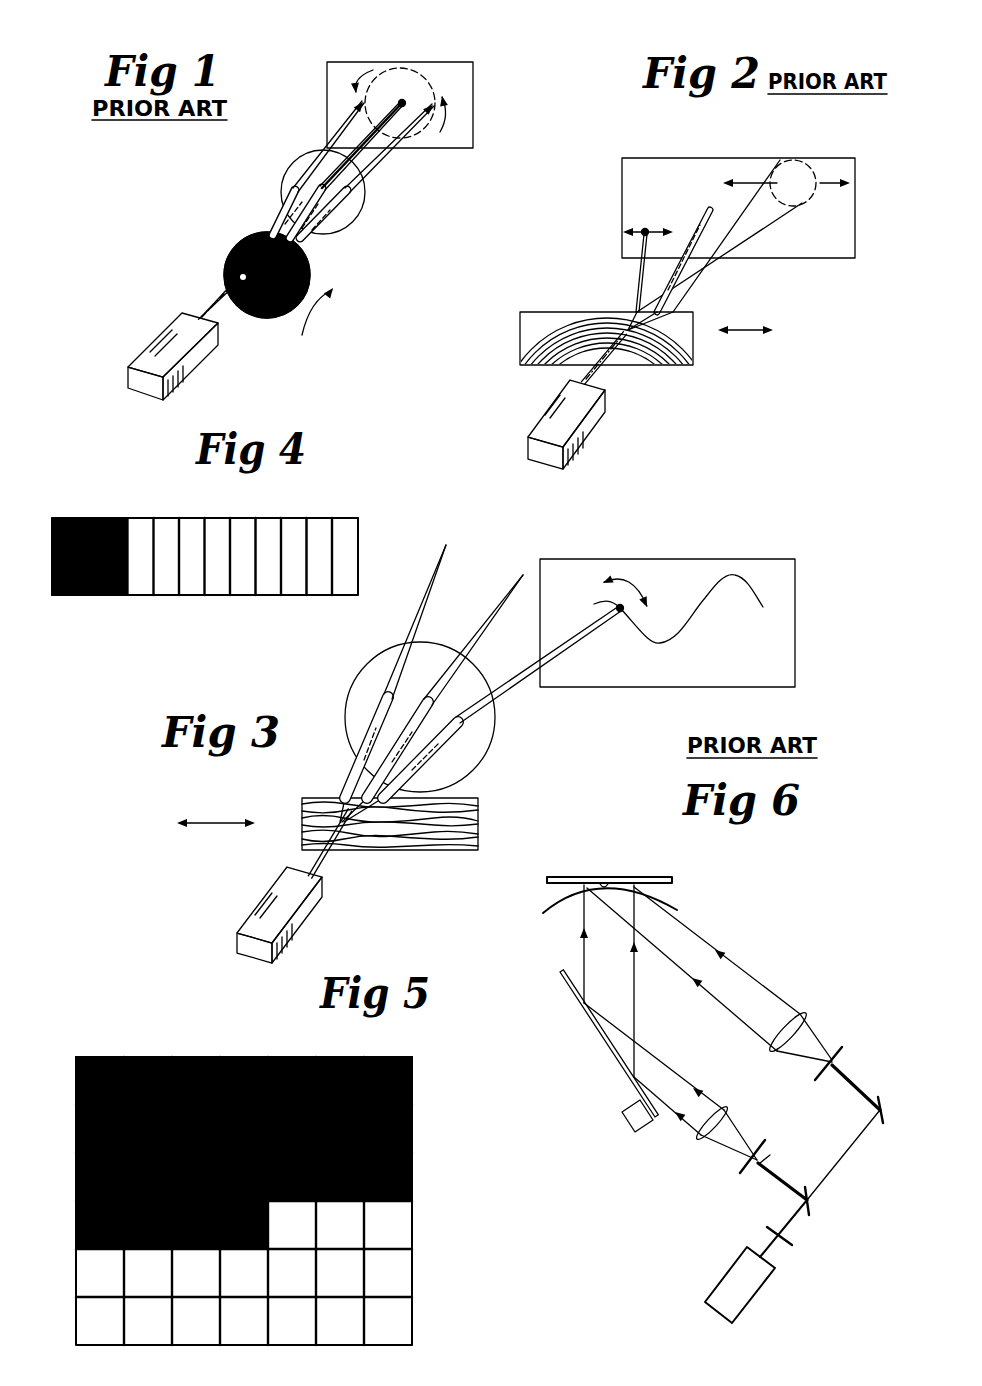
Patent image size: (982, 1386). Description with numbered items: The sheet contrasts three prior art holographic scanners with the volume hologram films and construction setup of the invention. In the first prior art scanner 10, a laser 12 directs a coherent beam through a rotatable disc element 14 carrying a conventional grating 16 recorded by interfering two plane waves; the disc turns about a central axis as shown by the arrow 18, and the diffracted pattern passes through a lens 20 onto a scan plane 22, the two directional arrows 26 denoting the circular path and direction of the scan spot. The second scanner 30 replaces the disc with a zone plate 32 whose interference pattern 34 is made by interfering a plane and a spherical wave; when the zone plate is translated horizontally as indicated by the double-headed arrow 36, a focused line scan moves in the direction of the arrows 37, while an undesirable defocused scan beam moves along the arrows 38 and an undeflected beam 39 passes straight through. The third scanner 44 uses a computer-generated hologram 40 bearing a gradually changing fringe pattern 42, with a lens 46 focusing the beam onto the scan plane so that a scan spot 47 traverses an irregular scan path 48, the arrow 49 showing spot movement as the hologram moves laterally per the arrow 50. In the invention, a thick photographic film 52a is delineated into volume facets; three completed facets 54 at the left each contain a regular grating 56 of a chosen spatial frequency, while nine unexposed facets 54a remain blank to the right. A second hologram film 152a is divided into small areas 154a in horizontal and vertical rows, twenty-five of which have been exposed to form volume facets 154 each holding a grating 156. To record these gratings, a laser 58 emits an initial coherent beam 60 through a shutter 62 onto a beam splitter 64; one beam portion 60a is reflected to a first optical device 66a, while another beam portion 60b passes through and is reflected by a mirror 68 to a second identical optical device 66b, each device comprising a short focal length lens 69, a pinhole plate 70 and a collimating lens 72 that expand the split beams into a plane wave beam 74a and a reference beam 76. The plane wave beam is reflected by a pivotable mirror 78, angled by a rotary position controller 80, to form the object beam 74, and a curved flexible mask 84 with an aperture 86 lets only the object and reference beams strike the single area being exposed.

In FIG. 1, the holographic scanner 10 is at (148, 207).
In FIG. 1, the laser 12 is at (157, 340).
In FIG. 2, the laser 12 is at (535, 425).
In FIG. 3, the laser 12 is at (248, 917).
In FIG. 1, the rotatable disc element 14 is at (269, 318).
In FIG. 1, the grating 16 is at (233, 245).
In FIG. 1, the arrow 18 is at (345, 304).
In FIG. 1, the lens 20 is at (292, 162).
In FIG. 1, the scan plane 22 is at (437, 62).
In FIG. 2, the scan plane 22 is at (640, 157).
In FIG. 3, the scan plane 22 is at (796, 607).
In FIG. 1, the directional arrows 26 is at (366, 70).
In FIG. 2, the scanner 30 is at (722, 360).
In FIG. 2, the zone plate 32 is at (540, 312).
In FIG. 2, the interference pattern 34 is at (637, 352).
In FIG. 2, the double-headed arrow 36 is at (748, 330).
In FIG. 2, the arrows 37 is at (642, 229).
In FIG. 2, the arrows 38 is at (746, 182).
In FIG. 2, the undeflected beam 39 is at (692, 223).
In FIG. 3, the computer-generated hologram 40 is at (480, 816).
In FIG. 3, the fringe pattern 42 is at (435, 836).
In FIG. 3, the scanner 44 is at (528, 716).
In FIG. 3, the lens 46 is at (367, 664).
In FIG. 3, the scan spot 47 is at (618, 616).
In FIG. 3, the scan path 48 is at (728, 574).
In FIG. 3, the arrow 49 is at (632, 595).
In FIG. 3, the arrow 50 is at (217, 821).
In FIG. 4, the photographic film 52a is at (120, 605).
In FIG. 6, the photographic film 52a is at (565, 877).
In FIG. 4, the completed facet 54 is at (115, 518).
In FIG. 4, the unexposed facet 54a is at (320, 587).
In FIG. 4, the grating 56 is at (62, 596).
In FIG. 6, the laser 58 is at (710, 1297).
In FIG. 6, the initial coherent beam 60 is at (785, 1253).
In FIG. 6, the beam portion 60a is at (783, 1183).
In FIG. 6, the beam portion 60b is at (857, 1088).
In FIG. 6, the shutter 62 is at (768, 1230).
In FIG. 6, the beam splitter 64 is at (812, 1210).
In FIG. 6, the first optical device 66a is at (702, 1155).
In FIG. 6, the second optical device 66b is at (834, 1008).
In FIG. 6, the mirror 68 is at (885, 1118).
In FIG. 6, the short focal length lens 69 is at (762, 1162).
In FIG. 6, the pinhole plate 70 is at (838, 1055).
In FIG. 6, the collimating lens 72 is at (796, 1012).
In FIG. 6, the object beam 74 is at (633, 967).
In FIG. 6, the plane wave beam 74a is at (657, 1093).
In FIG. 6, the reference beam 76 is at (688, 968).
In FIG. 6, the pivotable mirror 78 is at (590, 1018).
In FIG. 6, the rotary position controller 80 is at (620, 1112).
In FIG. 6, the curved flexible mask 84 is at (675, 906).
In FIG. 6, the aperture 86 is at (606, 887).
In FIG. 5, the hologram film 152a is at (418, 1209).
In FIG. 5, the volume facet 154 is at (180, 1057).
In FIG. 5, the small area 154a is at (87, 1283).
In FIG. 5, the grating 156 is at (393, 1057).